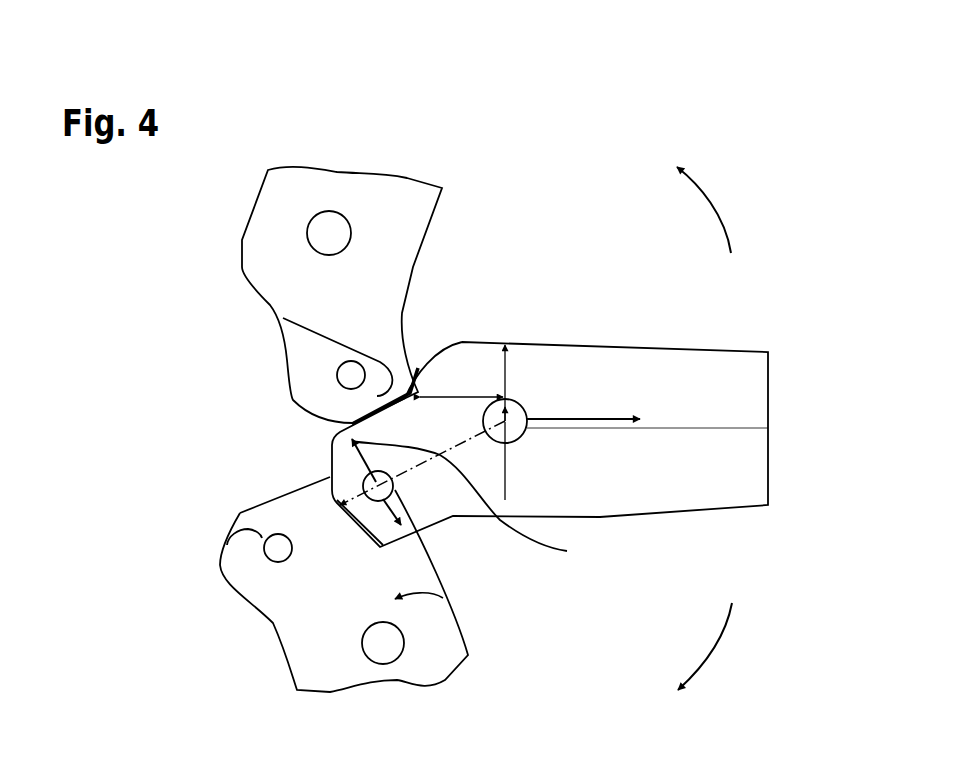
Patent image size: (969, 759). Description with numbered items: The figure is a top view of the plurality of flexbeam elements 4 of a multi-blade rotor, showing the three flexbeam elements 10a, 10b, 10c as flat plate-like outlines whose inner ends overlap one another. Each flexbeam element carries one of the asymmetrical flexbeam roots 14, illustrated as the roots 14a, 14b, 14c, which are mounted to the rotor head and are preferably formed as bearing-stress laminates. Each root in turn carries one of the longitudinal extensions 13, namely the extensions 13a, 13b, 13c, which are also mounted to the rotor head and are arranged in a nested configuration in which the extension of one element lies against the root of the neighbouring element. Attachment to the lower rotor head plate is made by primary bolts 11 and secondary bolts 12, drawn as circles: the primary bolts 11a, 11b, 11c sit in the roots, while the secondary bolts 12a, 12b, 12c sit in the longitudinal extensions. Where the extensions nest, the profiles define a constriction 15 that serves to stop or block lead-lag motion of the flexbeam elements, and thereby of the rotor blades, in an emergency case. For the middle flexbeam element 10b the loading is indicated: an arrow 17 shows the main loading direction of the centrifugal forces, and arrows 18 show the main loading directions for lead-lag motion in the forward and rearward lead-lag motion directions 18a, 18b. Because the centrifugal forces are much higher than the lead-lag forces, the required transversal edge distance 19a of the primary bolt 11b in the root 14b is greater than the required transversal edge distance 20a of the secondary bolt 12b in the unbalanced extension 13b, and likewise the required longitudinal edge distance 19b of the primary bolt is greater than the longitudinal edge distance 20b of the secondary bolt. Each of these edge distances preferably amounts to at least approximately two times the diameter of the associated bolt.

The plurality of flexbeam elements 4 is at (171, 214).
The flexbeam element 10a is at (408, 210).
The flexbeam element 10b is at (733, 403).
The flexbeam element 10c is at (443, 665).
The primary bolts 11 is at (305, 211).
The primary bolt 11a is at (329, 232).
The primary bolt 11b is at (508, 424).
The primary bolt 11c is at (383, 643).
The secondary bolts 12 is at (330, 375).
The secondary bolt 12a is at (350, 374).
The secondary bolt 12b is at (393, 490).
The secondary bolt 12c is at (278, 549).
The plurality of longitudinal extensions 13 is at (325, 428).
The longitudinal extension 13a is at (283, 318).
The longitudinal extension 13b is at (363, 517).
The longitudinal extension 13c is at (227, 545).
The plurality of flexbeam roots 14 is at (240, 268).
The asymmetrical flexbeam root 14a is at (353, 264).
The asymmetrical flexbeam root 14b is at (484, 366).
The asymmetrical flexbeam root 14c is at (457, 620).
The constriction 15 is at (418, 366).
The arrow indicating main loading direction for centrifugal forces 17 is at (572, 417).
The arrows indicating main loading directions for lead-lag motions 18 is at (328, 470).
The forward lead-lag motion direction 18a is at (717, 212).
The rearward lead-lag motion direction 18b is at (712, 653).
The required transversal edge distance of the primary bolt 19a is at (575, 418).
The required longitudinal edge distance of the primary bolt 19b is at (462, 395).
The required transversal edge distance of the secondary bolt 20a is at (483, 506).
The longitudinal edge distance of the secondary bolt 20b is at (328, 477).